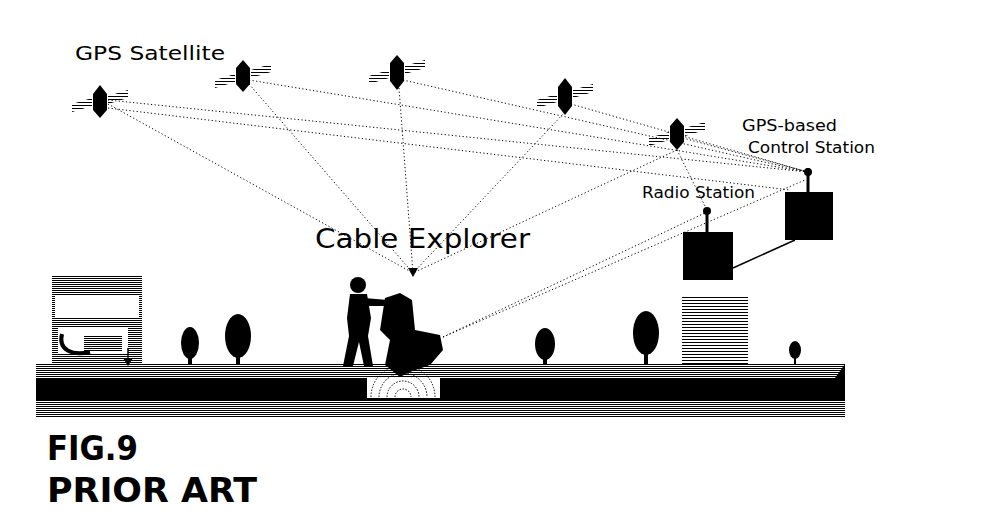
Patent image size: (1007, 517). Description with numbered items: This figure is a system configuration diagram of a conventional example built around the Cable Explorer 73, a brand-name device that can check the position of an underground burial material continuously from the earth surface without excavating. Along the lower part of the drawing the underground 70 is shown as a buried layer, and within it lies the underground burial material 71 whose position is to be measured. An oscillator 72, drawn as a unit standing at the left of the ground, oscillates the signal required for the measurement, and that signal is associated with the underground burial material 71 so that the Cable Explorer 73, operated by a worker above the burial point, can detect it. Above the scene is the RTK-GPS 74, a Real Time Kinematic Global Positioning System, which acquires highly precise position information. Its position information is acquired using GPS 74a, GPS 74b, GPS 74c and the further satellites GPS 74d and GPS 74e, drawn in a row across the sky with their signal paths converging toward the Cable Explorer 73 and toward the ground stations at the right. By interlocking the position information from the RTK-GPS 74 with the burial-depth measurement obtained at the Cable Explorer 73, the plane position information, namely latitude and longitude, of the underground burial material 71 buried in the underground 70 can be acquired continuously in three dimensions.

The underground 70 is at (788, 398).
The underground burial material 71 is at (403, 398).
The oscillator 72 is at (93, 284).
The Cable Explorer 73 is at (422, 340).
The RTK-GPS 74 is at (762, 100).
The GPS 74a is at (93, 89).
The GPS 74b is at (243, 63).
The GPS 74c is at (400, 60).
The GPS 74d is at (567, 82).
The GPS 74e is at (676, 120).